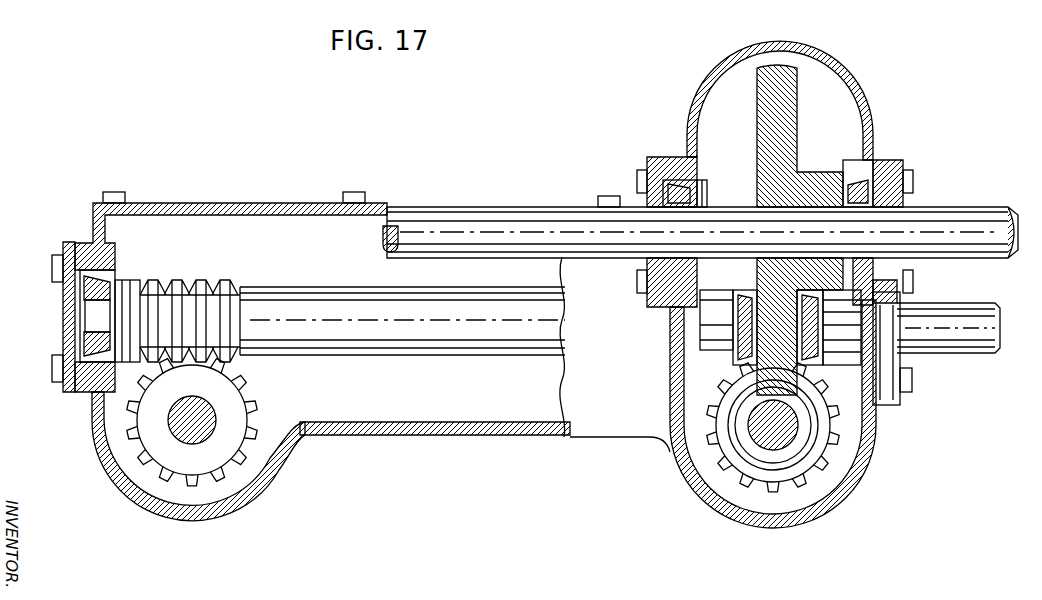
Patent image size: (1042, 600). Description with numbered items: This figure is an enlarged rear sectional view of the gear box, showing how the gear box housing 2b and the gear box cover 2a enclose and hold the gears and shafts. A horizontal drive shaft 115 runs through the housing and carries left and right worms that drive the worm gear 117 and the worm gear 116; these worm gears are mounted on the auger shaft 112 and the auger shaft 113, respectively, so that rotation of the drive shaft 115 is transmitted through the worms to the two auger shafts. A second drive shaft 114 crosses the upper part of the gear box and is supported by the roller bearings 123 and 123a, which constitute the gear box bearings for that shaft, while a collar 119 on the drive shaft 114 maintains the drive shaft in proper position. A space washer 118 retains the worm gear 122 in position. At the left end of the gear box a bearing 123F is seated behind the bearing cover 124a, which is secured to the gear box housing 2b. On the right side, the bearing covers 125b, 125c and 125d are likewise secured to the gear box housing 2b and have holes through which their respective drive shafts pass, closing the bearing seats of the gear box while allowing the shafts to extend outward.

The gear box cover 2a is at (236, 204).
The gear box housing 2b is at (483, 436).
The auger shaft 112 is at (212, 404).
The auger shaft 113 is at (812, 416).
The drive shaft 114 is at (958, 254).
The drive shaft 115 is at (392, 356).
The worm gear 116 is at (822, 460).
The worm gear 117 is at (245, 428).
The space washer 118 is at (862, 142).
The collar 119 is at (720, 184).
The worm gear 122 is at (757, 120).
The roller bearing 123 is at (640, 205).
The roller bearing 123a is at (912, 207).
The bearing 123F is at (108, 276).
The bearing cover 124a is at (75, 396).
The bearing cover 125b is at (890, 405).
The bearing cover 125c is at (906, 165).
The bearing cover 125d is at (648, 310).